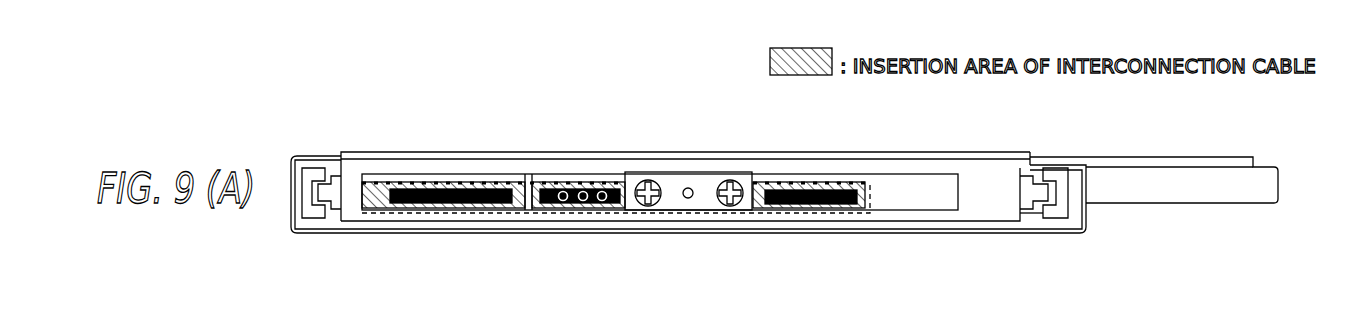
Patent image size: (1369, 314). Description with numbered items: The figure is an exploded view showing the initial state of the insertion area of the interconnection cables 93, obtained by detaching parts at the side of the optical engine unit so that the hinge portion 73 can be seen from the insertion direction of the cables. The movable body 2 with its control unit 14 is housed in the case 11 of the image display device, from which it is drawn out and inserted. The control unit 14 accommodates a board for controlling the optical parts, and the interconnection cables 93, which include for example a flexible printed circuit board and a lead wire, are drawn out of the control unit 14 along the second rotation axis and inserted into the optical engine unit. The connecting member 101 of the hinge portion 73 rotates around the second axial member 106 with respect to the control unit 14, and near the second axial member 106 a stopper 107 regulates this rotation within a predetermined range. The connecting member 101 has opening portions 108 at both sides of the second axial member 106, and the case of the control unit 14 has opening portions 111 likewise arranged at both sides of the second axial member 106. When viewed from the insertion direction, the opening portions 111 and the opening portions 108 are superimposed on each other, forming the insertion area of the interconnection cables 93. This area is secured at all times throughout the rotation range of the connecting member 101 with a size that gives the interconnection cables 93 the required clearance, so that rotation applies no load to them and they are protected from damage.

The connector 2 is at (538, 110).
The case 11 is at (1120, 156).
The control unit 14 is at (1035, 158).
The hinge portion 73 is at (1030, 218).
The interconnection cables 93 is at (437, 205).
The connecting member 101 is at (988, 222).
The second axial member 106 is at (689, 200).
The stopper 107 is at (726, 178).
The opening portions 108 is at (492, 204).
The opening portions 111 is at (420, 186).